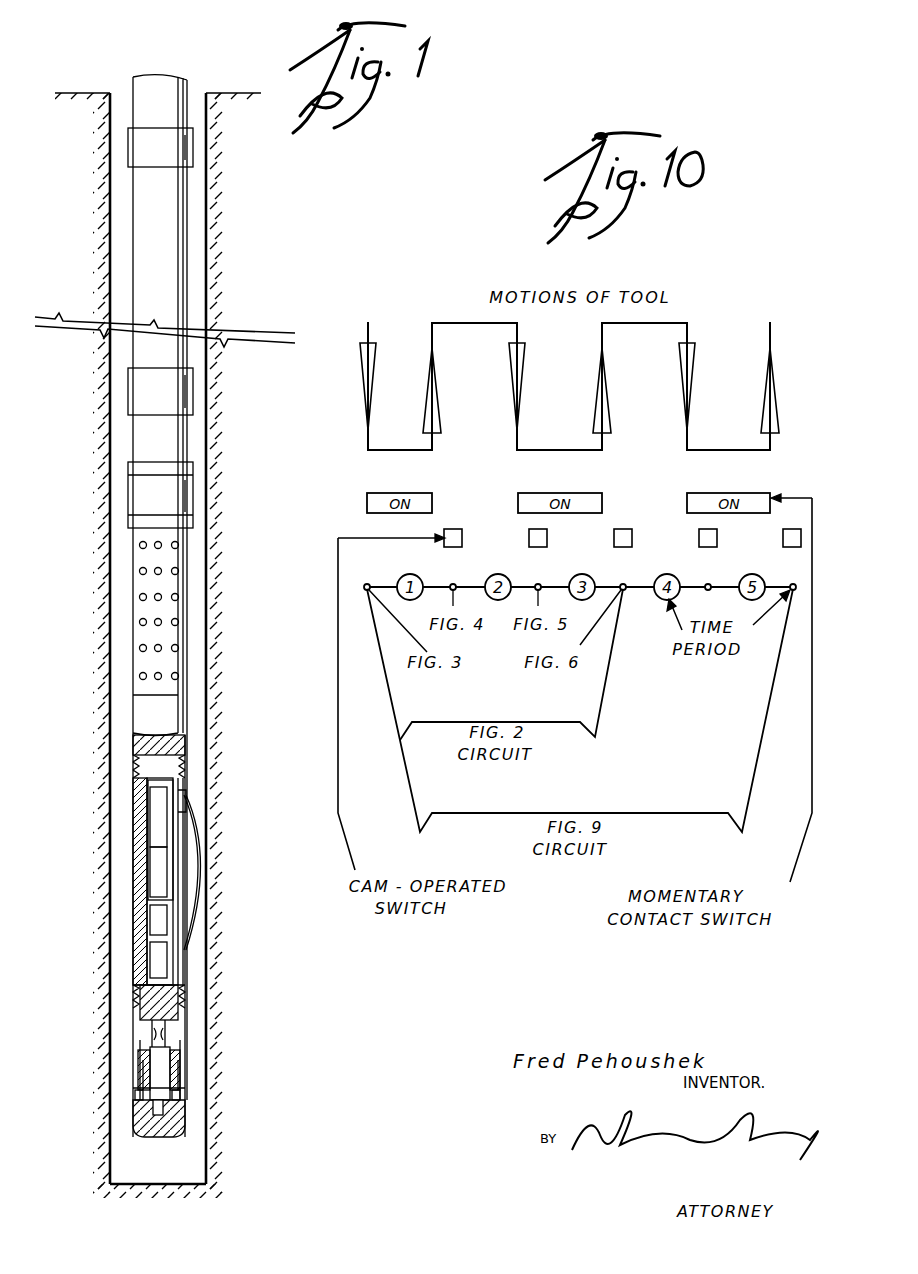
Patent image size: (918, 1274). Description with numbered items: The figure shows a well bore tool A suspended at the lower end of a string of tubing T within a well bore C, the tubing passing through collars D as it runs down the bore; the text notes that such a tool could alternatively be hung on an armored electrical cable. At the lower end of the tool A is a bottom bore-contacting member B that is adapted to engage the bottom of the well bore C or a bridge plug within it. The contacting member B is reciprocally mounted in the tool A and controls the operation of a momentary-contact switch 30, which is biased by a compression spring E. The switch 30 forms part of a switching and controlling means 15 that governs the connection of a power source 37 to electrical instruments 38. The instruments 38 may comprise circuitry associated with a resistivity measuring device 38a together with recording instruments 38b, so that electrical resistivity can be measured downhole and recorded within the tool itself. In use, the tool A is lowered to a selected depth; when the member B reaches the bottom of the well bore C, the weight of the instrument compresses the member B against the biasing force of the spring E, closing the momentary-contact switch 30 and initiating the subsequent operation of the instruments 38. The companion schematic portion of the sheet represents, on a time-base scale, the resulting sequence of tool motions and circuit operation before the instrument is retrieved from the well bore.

The string of tubing T is at (145, 110).
The well bore C is at (110, 222).
The tubing collars D is at (148, 272).
The well bore tool A is at (186, 792).
The recording instruments 38b is at (157, 802).
The electrical instruments 38 is at (146, 838).
The resistivity measuring device 38a is at (157, 880).
The power source 37 is at (157, 917).
The switching and controlling means 15 is at (157, 960).
The momentary-contact switch 30 is at (157, 1040).
The compression spring E is at (138, 1098).
The bottom bore-contacting member B is at (133, 1132).